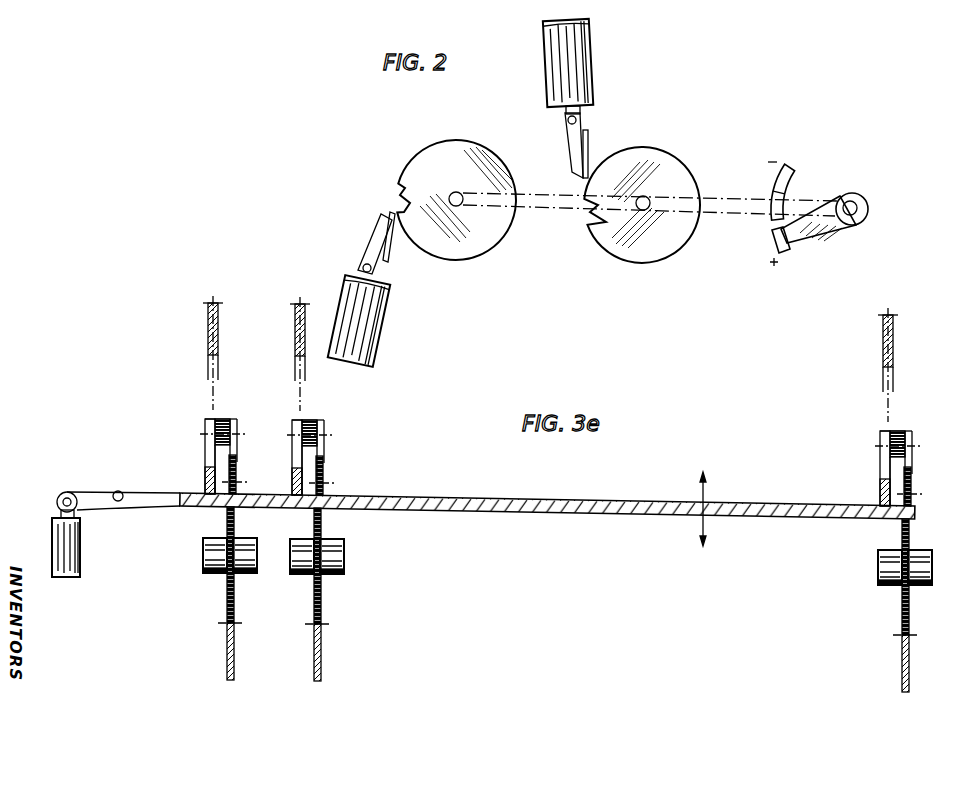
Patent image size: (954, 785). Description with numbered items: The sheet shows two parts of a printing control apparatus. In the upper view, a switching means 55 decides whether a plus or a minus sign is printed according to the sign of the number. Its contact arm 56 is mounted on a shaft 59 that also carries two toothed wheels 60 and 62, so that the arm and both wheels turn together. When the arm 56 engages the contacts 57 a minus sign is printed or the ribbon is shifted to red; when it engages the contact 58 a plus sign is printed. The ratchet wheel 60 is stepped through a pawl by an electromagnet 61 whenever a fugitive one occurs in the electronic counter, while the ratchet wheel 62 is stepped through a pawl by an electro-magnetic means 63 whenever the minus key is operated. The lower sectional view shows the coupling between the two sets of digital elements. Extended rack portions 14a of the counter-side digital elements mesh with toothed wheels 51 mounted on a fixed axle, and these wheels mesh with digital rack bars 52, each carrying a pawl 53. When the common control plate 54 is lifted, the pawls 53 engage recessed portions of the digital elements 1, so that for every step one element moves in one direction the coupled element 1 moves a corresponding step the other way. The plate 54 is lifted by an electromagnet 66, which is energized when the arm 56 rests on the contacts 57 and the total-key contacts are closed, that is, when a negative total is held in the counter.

In FIG. 3e, the digital element 1 is at (218, 340).
In FIG. 3e, the rack portion 14a is at (234, 647).
In FIG. 3e, the toothed wheel 51 is at (226, 525).
In FIG. 3e, the digital rack bar 52 is at (236, 468).
In FIG. 3e, the pawl 53 is at (205, 456).
In FIG. 3e, the control plate 54 is at (622, 510).
In FIG. 2, the switching means 55 is at (824, 186).
In FIG. 2, the contact arm 56 is at (832, 228).
In FIG. 2, the contacts 57 is at (786, 168).
In FIG. 2, the contact 58 is at (787, 253).
In FIG. 2, the shaft 59 is at (455, 206).
In FIG. 2, the ratchet wheel 60 is at (678, 172).
In FIG. 2, the electromagnet 61 is at (594, 88).
In FIG. 2, the ratchet wheel 62 is at (427, 163).
In FIG. 2, the electro-magnetic means 63 is at (388, 285).
In FIG. 3e, the electromagnet 66 is at (82, 528).